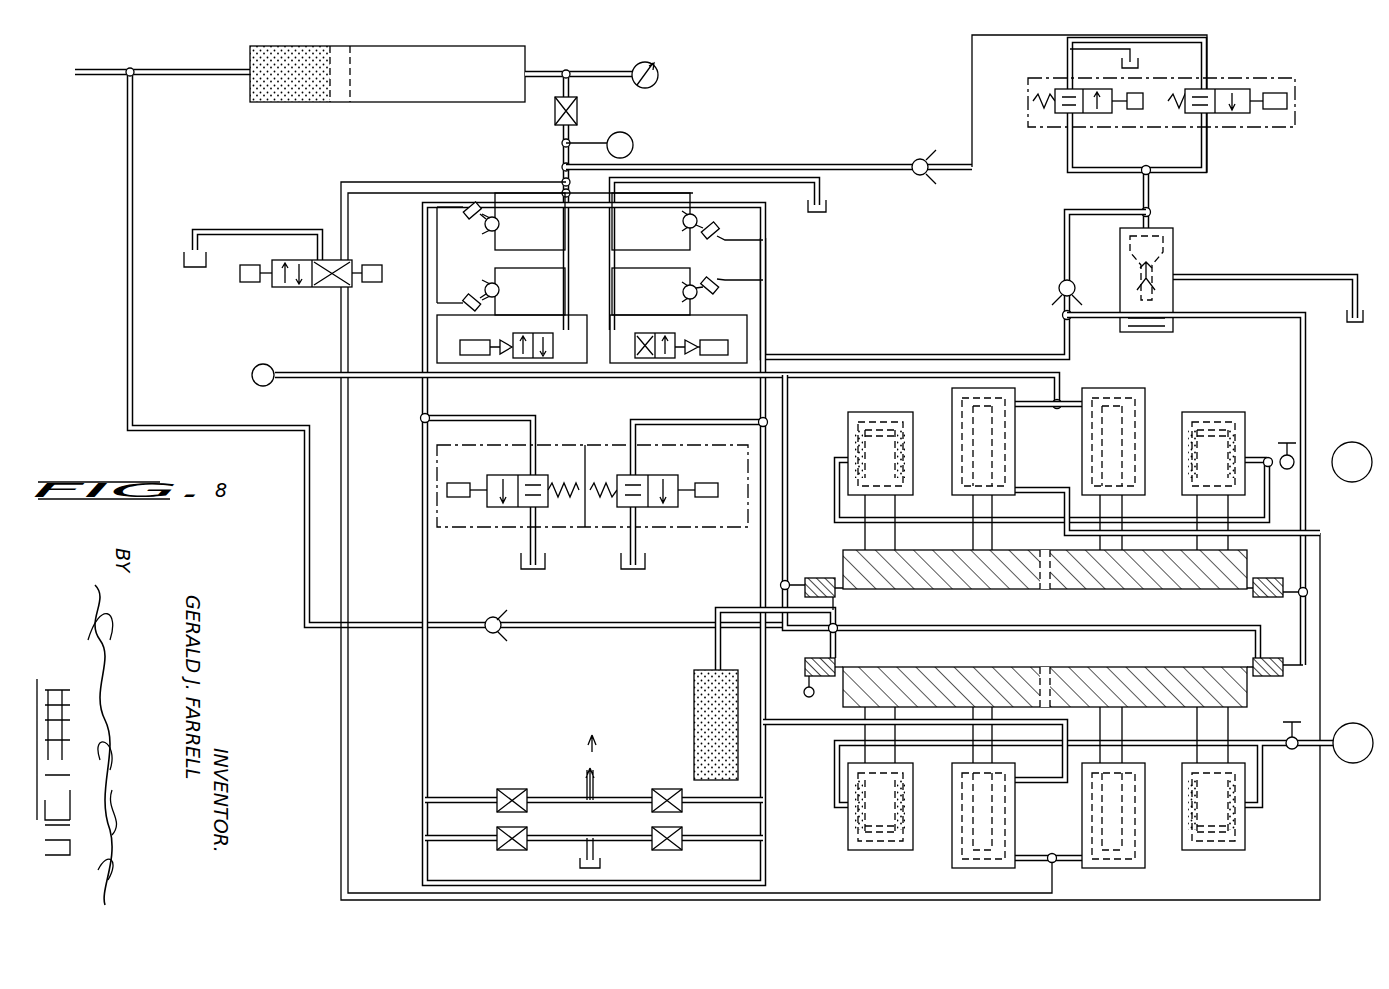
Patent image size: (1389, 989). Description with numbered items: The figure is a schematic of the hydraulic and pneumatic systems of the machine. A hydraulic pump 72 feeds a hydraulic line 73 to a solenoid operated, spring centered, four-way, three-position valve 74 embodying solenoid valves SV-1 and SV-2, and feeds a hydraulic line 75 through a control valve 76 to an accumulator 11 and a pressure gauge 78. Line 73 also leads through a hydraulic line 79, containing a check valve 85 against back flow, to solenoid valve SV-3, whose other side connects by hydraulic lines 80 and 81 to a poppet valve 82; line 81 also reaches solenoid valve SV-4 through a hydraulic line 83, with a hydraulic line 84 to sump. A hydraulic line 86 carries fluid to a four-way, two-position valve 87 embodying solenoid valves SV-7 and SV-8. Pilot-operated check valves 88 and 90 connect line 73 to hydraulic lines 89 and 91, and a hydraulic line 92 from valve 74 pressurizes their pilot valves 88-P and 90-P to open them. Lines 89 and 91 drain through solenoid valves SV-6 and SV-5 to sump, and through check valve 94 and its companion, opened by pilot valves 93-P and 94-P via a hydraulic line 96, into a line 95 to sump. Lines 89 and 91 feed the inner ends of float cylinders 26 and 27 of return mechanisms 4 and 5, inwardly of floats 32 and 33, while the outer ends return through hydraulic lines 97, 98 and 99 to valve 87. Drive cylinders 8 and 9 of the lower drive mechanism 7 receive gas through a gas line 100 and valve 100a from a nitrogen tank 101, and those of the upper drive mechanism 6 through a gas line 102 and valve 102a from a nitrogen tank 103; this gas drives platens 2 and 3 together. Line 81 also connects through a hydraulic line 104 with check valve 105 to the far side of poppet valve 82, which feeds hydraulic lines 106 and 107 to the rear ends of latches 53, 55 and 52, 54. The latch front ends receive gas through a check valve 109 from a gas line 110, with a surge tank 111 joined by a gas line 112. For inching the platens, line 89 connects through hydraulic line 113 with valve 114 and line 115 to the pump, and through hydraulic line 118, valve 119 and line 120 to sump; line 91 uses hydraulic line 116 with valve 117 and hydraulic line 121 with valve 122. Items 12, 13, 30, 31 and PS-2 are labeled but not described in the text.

The platen 2 is at (910, 585).
The platen 3 is at (922, 672).
The upper return mechanism 4 is at (1132, 367).
The lower return mechanism 5 is at (1131, 882).
The upper drive mechanism 6 is at (1243, 371).
The lower drive mechanism 7 is at (1248, 859).
The drive cylinder 8 is at (848, 428).
The drive cylinder 9 is at (1238, 848).
The accumulator 11 is at (472, 70).
The fluid line 12 is at (840, 504).
The fluid line 13 is at (1205, 507).
The float cylinder 26 is at (950, 397).
The float cylinder 27 is at (1145, 397).
The piston rod 30 is at (970, 506).
The fluid line 31 is at (1112, 508).
The float 32 is at (962, 430).
The float 33 is at (1135, 430).
The latch 52 is at (1270, 577).
The latch 53 is at (818, 577).
The latch 54 is at (1272, 657).
The latch 55 is at (820, 656).
The hydraulic pump 72 is at (634, 142).
The hydraulic line 73 is at (562, 210).
The four-way, three-position valve 74 is at (628, 350).
The hydraulic line 75 is at (560, 136).
The control valve 76 is at (584, 106).
The pressure gauge 78 is at (656, 74).
The hydraulic line 79 is at (748, 165).
The hydraulic line 80 is at (1205, 150).
The hydraulic line 81 is at (1150, 192).
The poppet valve 82 is at (1174, 262).
The hydraulic line 83 is at (1068, 148).
The hydraulic line 84 is at (1070, 52).
The check valve 85 is at (916, 158).
The hydraulic line 86 is at (450, 168).
The four-way, two-position valve 87 is at (340, 266).
The pilot-operated check valve 88 is at (500, 222).
The pilot valve 88-P is at (470, 224).
The hydraulic line 89 is at (424, 553).
The pilot-operated check valve 90 is at (500, 288).
The pilot valve 90-P is at (466, 292).
The hydraulic line 91 is at (762, 562).
The hydraulic line 92 is at (424, 322).
The pilot valve 93-P is at (702, 214).
The pilot-operated check valve 94 is at (682, 292).
The pilot valve 94-P is at (710, 276).
The line 95 is at (610, 232).
The hydraulic line 96 is at (758, 306).
The hydraulic line 97 is at (340, 694).
The hydraulic line 98 is at (340, 324).
The hydraulic line 99 is at (515, 382).
The gas line 100 is at (1286, 749).
The valve 100a is at (1294, 722).
The tank of pressurized nitrogen 101 is at (1352, 758).
The gas line 102 is at (1298, 462).
The valve 102a is at (1292, 440).
The tank of pressurized nitrogen 103 is at (1350, 475).
The hydraulic line 104 is at (1065, 232).
The check valve 105 is at (1059, 290).
The hydraulic line 106 is at (1065, 344).
The hydraulic line 107 is at (1305, 340).
The check valve 109 is at (493, 616).
The gas line 110 is at (132, 70).
The surge tank 111 is at (694, 686).
The gas line 112 is at (716, 610).
The hydraulic line 113 is at (452, 797).
The valve 114 is at (510, 789).
The hydraulic line 115 is at (594, 790).
The hydraulic line 116 is at (630, 806).
The valve 117 is at (662, 789).
The hydraulic line 118 is at (472, 844).
The valve 119 is at (508, 851).
The hydraulic line 120 is at (580, 851).
The hydraulic line 121 is at (718, 838).
The valve 122 is at (666, 851).
The solenoid valve SV-1 is at (512, 339).
The solenoid valve SV-2 is at (678, 339).
The solenoid valve SV-3 is at (1287, 101).
The solenoid valve SV-4 is at (1137, 110).
The solenoid valve SV-5 is at (708, 484).
The solenoid valve SV-6 is at (466, 474).
The solenoid valve SV-7 is at (374, 265).
The solenoid valve SV-8 is at (240, 276).
The pressure switch PS-2 is at (804, 693).